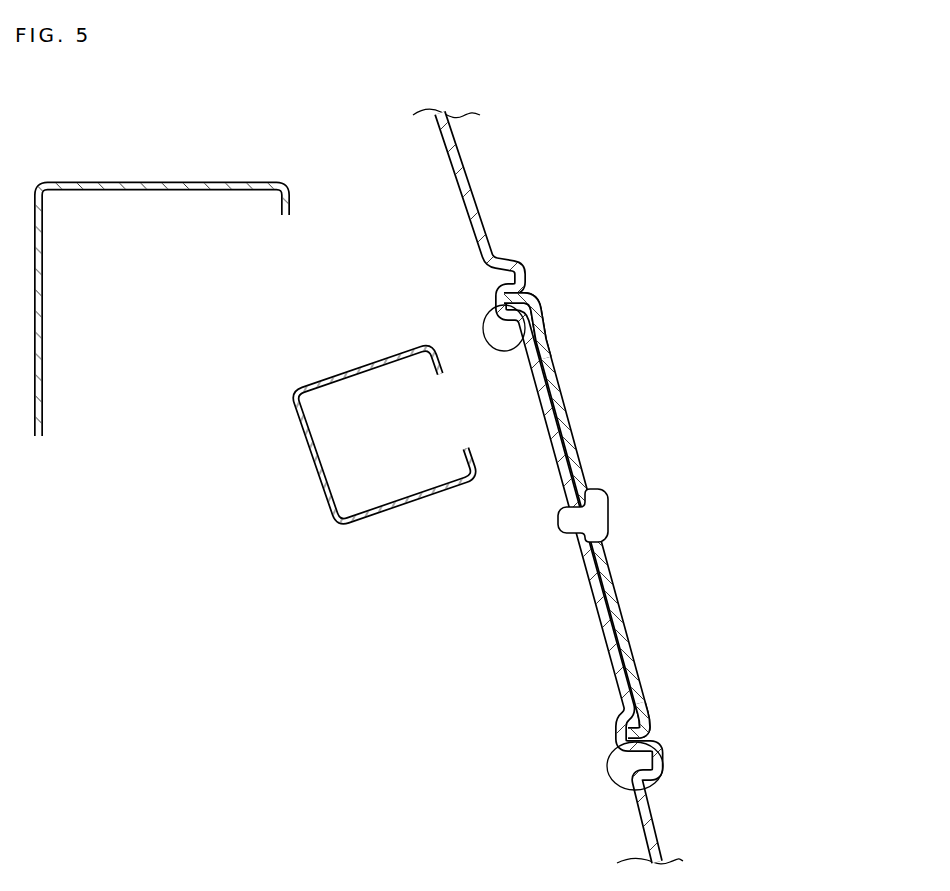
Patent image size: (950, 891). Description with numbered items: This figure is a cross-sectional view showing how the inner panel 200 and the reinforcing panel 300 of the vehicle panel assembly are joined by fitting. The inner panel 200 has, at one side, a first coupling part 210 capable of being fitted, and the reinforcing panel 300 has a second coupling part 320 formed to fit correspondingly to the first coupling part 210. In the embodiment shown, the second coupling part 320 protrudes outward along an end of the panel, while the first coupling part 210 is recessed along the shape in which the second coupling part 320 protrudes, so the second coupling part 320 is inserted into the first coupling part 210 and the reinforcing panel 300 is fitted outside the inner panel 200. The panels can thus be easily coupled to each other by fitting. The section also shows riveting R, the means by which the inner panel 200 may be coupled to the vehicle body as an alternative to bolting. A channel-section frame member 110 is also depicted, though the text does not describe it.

The frame member (C-shaped channel) 110 is at (325, 544).
The inner panel 200 is at (476, 164).
The reinforcing panel 300 is at (640, 604).
The second coupling part 320 is at (516, 296).
The first coupling part 210 is at (524, 345).
The riveting R is at (608, 528).